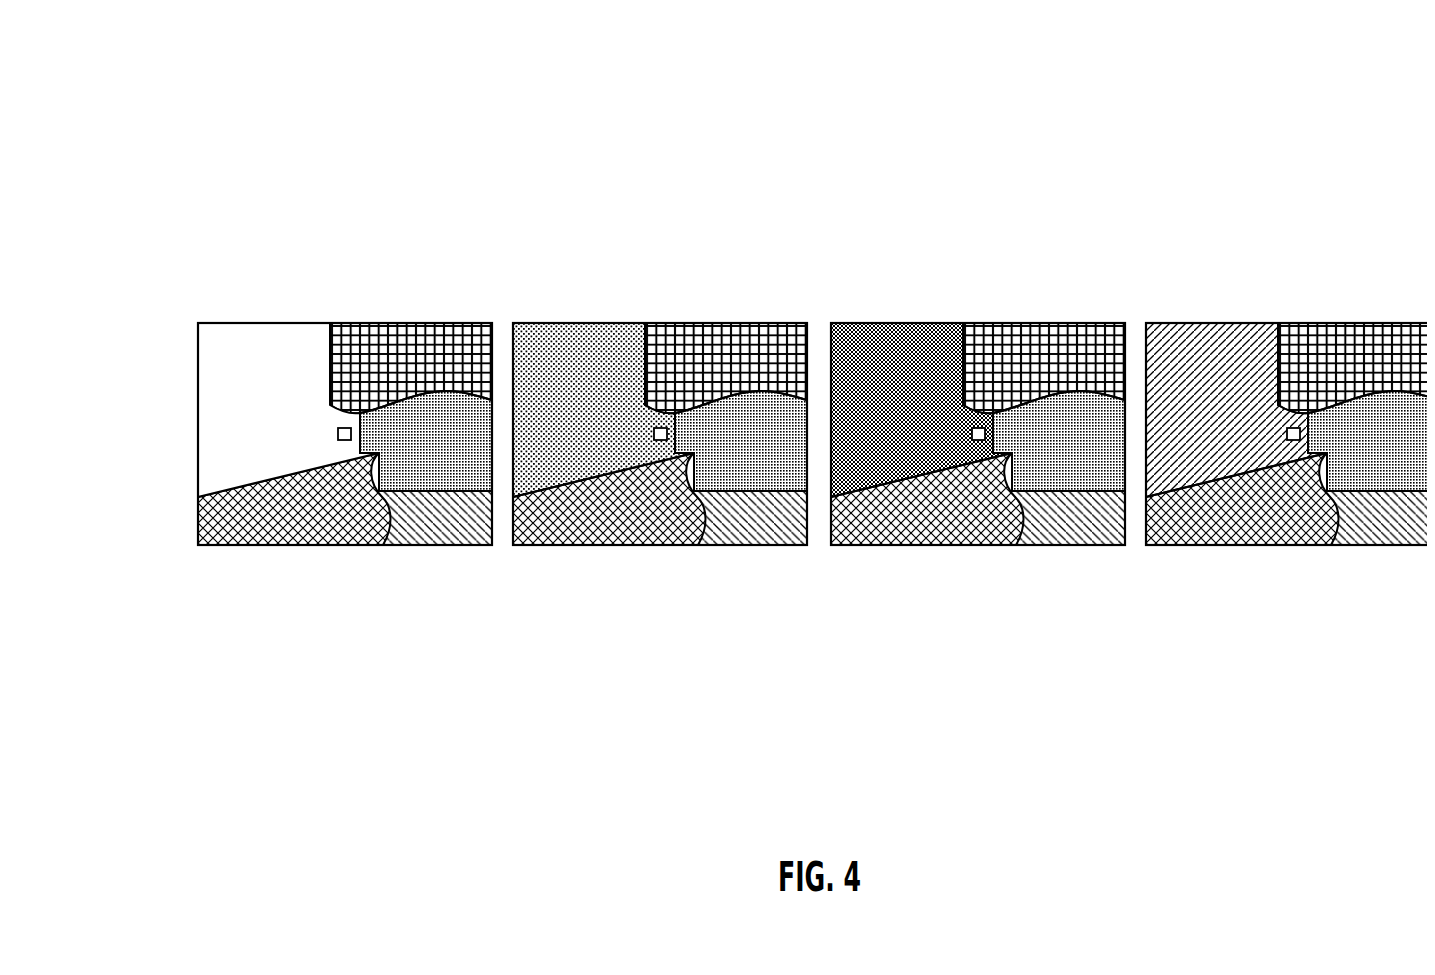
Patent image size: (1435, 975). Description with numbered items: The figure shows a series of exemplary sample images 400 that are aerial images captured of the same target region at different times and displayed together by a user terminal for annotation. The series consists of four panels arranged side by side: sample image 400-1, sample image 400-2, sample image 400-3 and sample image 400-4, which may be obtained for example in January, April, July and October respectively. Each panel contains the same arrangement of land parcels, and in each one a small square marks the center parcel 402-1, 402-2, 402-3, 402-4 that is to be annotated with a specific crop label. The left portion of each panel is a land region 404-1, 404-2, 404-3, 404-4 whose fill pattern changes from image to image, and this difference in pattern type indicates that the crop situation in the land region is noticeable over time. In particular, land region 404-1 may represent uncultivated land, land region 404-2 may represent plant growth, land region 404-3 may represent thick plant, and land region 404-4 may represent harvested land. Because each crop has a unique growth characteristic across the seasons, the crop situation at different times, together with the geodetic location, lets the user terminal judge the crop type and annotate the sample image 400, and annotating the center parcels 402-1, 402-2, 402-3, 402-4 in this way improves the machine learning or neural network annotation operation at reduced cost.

The series of sample images 400 is at (820, 45).
The sample image 400-1 is at (301, 381).
The sample image 400-2 is at (617, 386).
The sample image 400-3 is at (935, 386).
The sample image 400-4 is at (1273, 390).
The center parcel 402-1 is at (257, 329).
The center parcel 402-2 is at (576, 329).
The center parcel 402-3 is at (895, 329).
The center parcel 402-4 is at (1210, 329).
The land region 404-1 is at (244, 471).
The land region 404-2 is at (561, 471).
The land region 404-3 is at (878, 471).
The land region 404-4 is at (1230, 475).